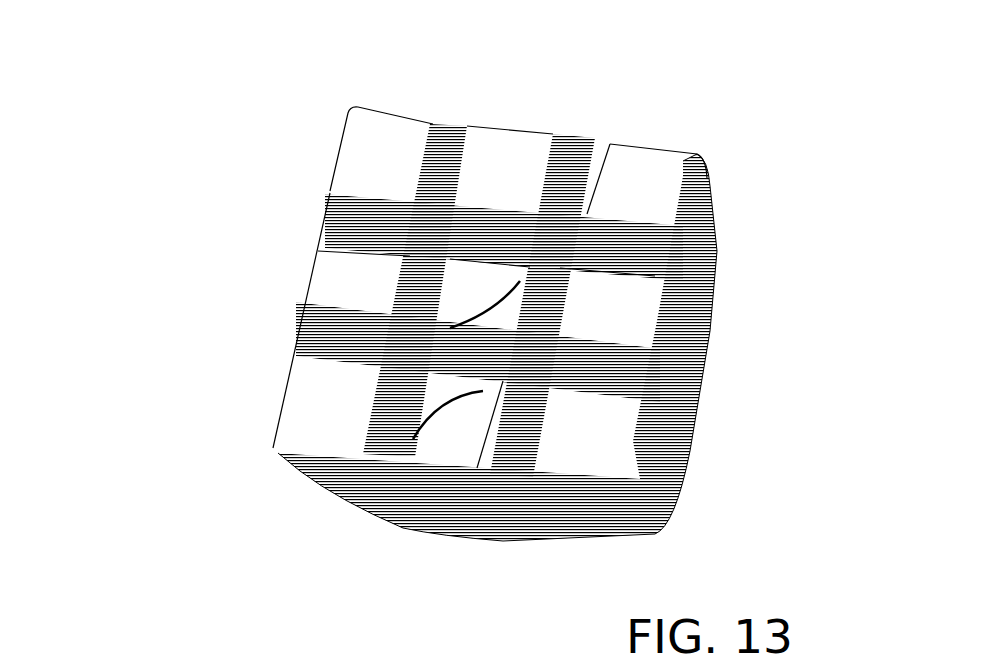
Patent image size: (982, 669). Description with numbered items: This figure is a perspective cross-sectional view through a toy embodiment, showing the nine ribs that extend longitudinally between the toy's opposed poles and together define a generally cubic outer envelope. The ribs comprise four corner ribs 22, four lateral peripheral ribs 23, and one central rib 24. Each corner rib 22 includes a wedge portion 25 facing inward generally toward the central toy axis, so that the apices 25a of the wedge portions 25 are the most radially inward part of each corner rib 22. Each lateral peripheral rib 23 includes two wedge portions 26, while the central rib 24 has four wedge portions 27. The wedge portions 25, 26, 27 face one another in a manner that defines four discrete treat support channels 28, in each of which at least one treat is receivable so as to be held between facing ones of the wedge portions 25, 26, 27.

The corner rib 22 is at (380, 150).
The lateral peripheral rib 23 is at (513, 153).
The central rib 24 is at (490, 287).
The wedge portion 25 is at (403, 190).
The apex 25a is at (423, 210).
The wedge portion 26 is at (403, 260).
The wedge portion 27 is at (505, 325).
The treat support channel 28 is at (440, 243).